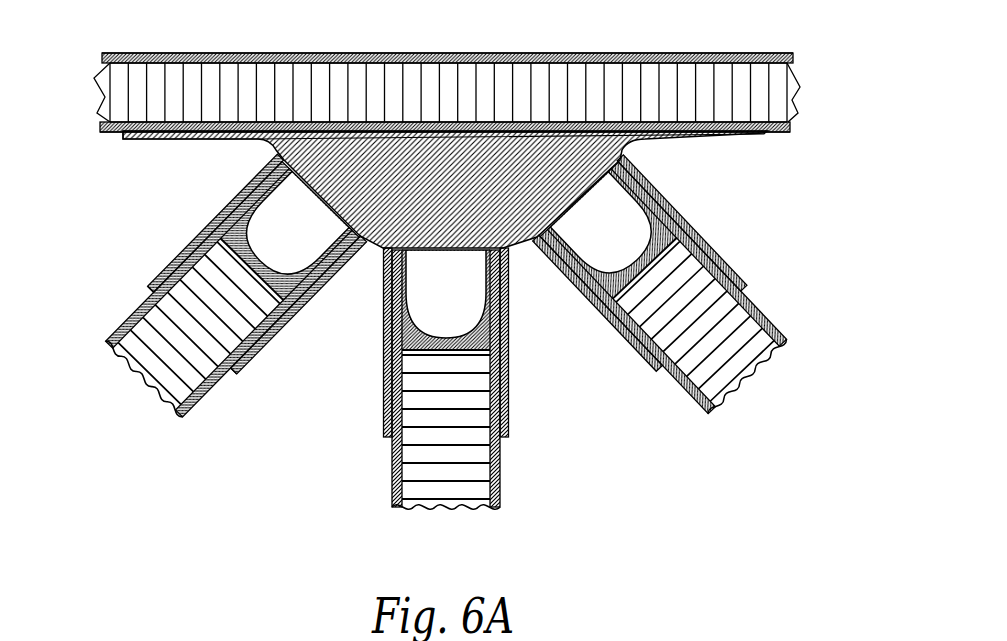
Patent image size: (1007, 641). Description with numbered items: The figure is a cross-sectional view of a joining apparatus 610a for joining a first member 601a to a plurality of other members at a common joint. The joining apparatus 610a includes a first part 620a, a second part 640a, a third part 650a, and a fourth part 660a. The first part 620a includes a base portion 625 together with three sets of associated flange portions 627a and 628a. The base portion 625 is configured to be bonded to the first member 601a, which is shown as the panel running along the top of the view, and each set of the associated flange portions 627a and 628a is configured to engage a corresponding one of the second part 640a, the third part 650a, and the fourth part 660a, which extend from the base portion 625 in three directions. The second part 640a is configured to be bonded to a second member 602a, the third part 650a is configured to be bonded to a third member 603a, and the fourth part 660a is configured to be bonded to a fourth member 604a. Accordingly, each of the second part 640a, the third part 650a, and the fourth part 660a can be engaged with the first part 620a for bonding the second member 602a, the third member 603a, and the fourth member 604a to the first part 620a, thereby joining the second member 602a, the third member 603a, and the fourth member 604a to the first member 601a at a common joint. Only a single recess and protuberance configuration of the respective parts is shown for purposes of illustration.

The first member 601a is at (210, 53).
The first part 620a is at (165, 140).
The base portion 625 is at (225, 140).
The flange portion 628a is at (210, 250).
The second part 640a is at (172, 285).
The flange portion 627a is at (278, 330).
The second member 602a is at (197, 408).
The third member 603a is at (500, 487).
The fourth member 604a is at (692, 396).
The third part 650a is at (448, 352).
The fourth part 660a is at (700, 250).
The joining apparatus 610a is at (350, 426).